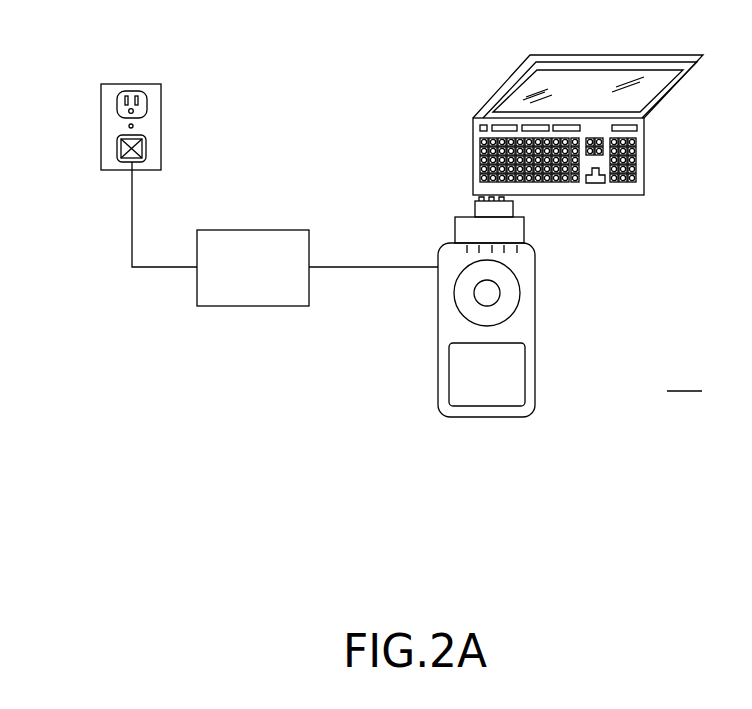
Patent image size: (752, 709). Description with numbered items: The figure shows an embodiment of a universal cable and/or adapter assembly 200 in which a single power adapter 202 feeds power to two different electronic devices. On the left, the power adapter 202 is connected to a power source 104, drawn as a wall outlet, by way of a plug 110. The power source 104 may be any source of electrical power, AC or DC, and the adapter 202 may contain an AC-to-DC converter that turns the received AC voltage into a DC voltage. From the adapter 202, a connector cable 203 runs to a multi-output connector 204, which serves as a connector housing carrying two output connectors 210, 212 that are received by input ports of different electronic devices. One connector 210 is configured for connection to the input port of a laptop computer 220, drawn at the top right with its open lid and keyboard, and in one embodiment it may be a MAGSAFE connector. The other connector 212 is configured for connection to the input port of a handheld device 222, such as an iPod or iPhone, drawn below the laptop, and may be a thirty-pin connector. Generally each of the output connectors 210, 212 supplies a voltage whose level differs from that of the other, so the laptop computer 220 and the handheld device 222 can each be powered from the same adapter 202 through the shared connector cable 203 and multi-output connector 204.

The power source 104 is at (102, 88).
The plug 110 is at (146, 150).
The universal cable and/or adapter assembly 200 is at (684, 380).
The power adapter 202 is at (284, 230).
The connector cable 203 is at (365, 266).
The multi-output connector 204 is at (525, 228).
The first connector 210 is at (475, 208).
The second connector 212 is at (535, 243).
The laptop computer 220 is at (496, 87).
The handheld device 222 is at (535, 322).